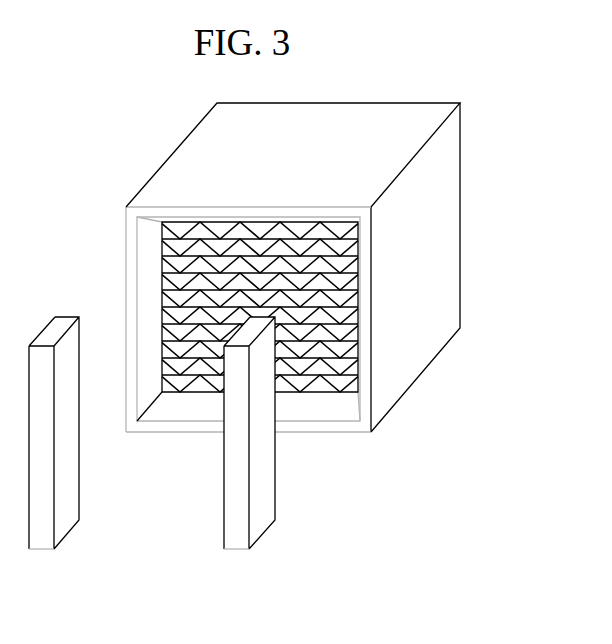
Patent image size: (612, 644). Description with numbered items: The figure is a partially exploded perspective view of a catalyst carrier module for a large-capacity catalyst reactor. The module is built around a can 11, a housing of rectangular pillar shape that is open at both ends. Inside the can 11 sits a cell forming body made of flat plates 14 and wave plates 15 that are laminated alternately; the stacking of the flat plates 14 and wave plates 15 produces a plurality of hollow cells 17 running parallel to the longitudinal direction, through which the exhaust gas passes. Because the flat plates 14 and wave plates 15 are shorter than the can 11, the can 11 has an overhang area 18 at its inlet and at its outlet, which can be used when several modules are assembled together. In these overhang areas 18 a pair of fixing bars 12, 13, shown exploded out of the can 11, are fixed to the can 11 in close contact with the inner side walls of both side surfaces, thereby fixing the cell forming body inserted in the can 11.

The can 11 is at (335, 432).
The fixing bar 12 is at (79, 490).
The fixing bar 13 is at (275, 497).
The flat plate 14 is at (168, 271).
The wave plate 15 is at (166, 250).
The hollow cell 17 is at (177, 283).
The overhang area 18 is at (182, 410).